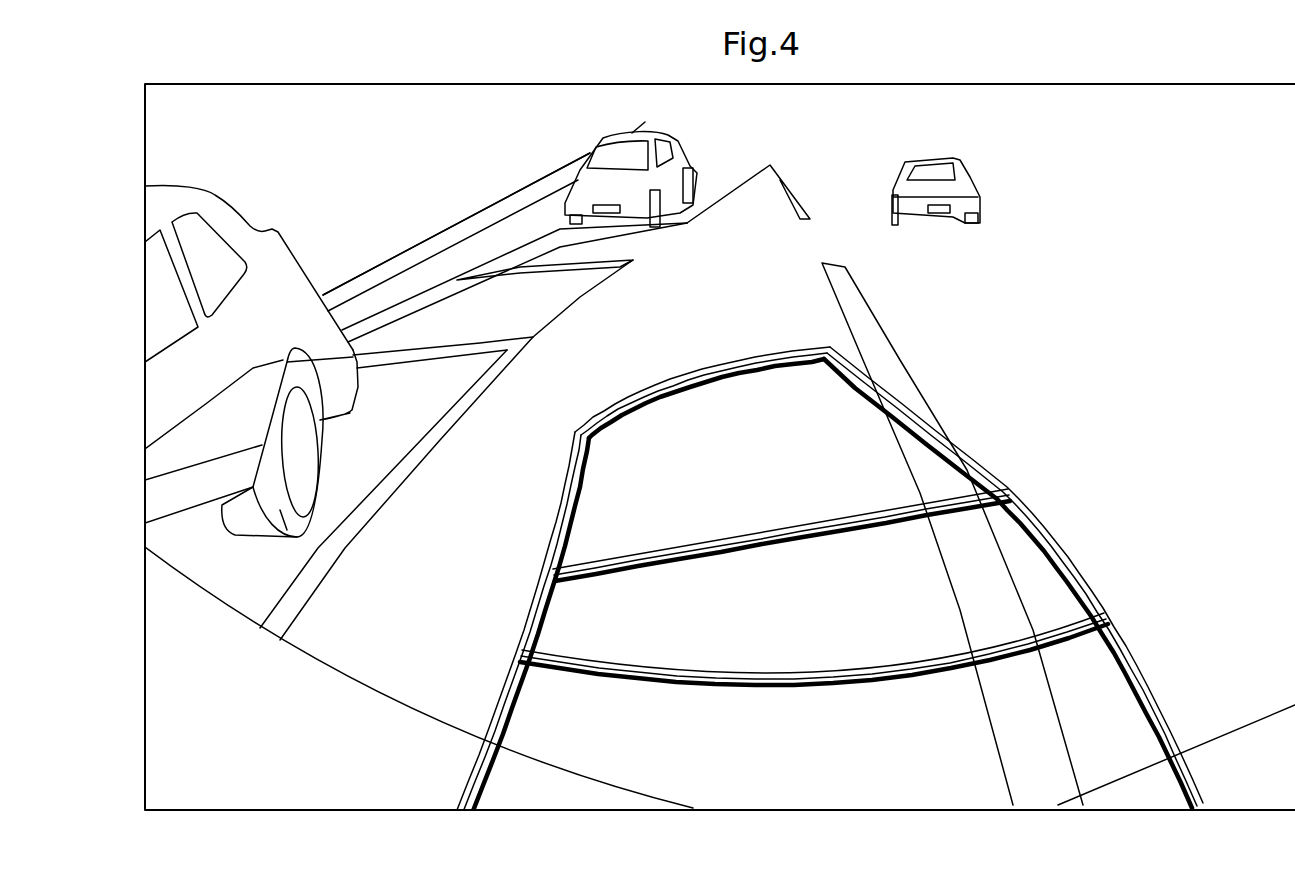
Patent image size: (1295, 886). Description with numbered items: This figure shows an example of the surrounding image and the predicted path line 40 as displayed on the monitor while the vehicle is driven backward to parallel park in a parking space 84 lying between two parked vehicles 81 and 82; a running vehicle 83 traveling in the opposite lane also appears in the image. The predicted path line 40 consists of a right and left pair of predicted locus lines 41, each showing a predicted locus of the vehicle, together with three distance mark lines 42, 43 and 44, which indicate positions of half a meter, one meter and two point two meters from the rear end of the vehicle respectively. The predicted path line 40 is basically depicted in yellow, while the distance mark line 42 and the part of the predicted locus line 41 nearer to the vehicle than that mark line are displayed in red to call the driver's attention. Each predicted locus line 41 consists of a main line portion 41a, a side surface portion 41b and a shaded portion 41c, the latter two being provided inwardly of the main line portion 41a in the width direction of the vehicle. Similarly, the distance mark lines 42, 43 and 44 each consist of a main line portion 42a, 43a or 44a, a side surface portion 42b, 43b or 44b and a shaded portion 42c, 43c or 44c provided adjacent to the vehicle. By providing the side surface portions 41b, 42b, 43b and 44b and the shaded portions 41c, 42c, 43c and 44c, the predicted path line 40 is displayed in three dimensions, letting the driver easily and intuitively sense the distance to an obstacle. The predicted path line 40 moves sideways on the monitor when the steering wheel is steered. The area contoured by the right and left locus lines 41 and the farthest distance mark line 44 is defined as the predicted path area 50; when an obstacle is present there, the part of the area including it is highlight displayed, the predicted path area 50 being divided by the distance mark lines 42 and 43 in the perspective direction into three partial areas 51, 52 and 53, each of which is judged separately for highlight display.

The predicted path line 40 is at (830, 574).
The predicted locus line 41 is at (830, 581).
The main line portion 41a is at (572, 457).
The side surface portion 41b is at (589, 491).
The shaded portion 41c is at (452, 438).
The distance mark line 42 is at (814, 698).
The main line portion 42a is at (814, 672).
The side surface portion 42b is at (842, 682).
The shaded portion 42c is at (787, 738).
The distance mark line 43 is at (781, 564).
The main line portion 43a is at (713, 540).
The side surface portion 43b is at (752, 528).
The shaded portion 43c is at (683, 599).
The distance mark line 44 is at (702, 415).
The main line portion 44a is at (675, 385).
The side surface portion 44b is at (714, 366).
The shaded portion 44c is at (647, 441).
The predicted path area 50 is at (1049, 534).
The partial area 51 is at (1104, 712).
The partial area 52 is at (1008, 537).
The partial area 53 is at (853, 408).
The parked vehicle 81 is at (229, 216).
The parked vehicle 82 is at (613, 135).
The running vehicle 83 is at (921, 157).
The parking space 84 is at (463, 296).